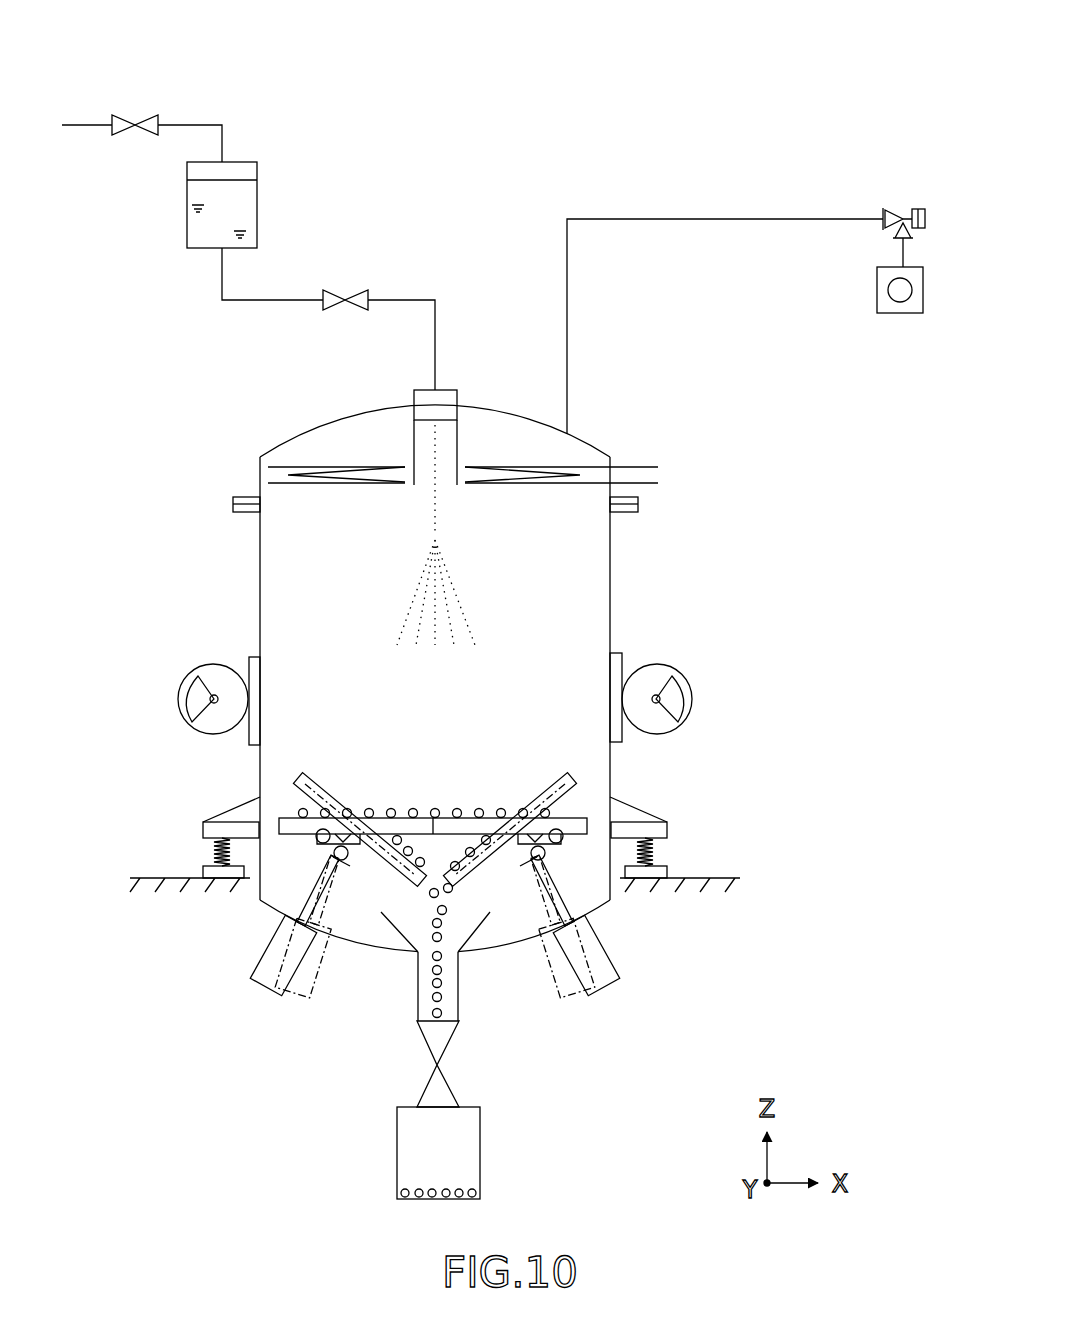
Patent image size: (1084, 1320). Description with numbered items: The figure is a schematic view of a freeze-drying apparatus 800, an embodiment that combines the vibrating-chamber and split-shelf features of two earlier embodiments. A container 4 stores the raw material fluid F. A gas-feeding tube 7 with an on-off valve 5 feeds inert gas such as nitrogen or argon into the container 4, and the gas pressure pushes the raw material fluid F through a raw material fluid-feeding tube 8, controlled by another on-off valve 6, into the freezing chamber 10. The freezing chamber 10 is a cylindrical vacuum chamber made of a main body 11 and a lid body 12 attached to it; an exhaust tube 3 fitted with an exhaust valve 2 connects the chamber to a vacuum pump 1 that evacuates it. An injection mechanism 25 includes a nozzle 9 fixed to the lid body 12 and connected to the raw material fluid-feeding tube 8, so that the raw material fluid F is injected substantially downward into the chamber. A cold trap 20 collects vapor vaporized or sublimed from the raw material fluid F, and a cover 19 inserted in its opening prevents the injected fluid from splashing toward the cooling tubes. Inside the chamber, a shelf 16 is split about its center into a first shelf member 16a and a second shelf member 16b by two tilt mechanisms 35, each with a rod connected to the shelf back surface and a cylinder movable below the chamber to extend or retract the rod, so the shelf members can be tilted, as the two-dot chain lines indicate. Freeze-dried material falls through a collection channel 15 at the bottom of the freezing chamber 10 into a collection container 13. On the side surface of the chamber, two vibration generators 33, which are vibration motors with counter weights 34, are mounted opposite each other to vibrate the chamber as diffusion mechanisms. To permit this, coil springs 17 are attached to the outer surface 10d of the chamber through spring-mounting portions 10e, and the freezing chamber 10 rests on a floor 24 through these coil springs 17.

The freeze-drying apparatus 800 is at (483, 96).
The vacuum pump 1 is at (880, 315).
The exhaust valve 2 is at (887, 212).
The exhaust tube 3 is at (709, 218).
The container 4 is at (257, 198).
The on-off valve 5 is at (150, 112).
The on-off valve 6 is at (363, 288).
The gas-feeding tube 7 is at (195, 123).
The raw material fluid-feeding tube 8 is at (437, 298).
The nozzle 9 is at (457, 390).
The freezing chamber 10 is at (439, 649).
The outer surface 10d is at (260, 565).
The spring-mounting portion 10e is at (228, 812).
The main body 11 is at (612, 590).
The lid body 12 is at (514, 406).
The collection container 13 is at (480, 1172).
The collection channel 15 is at (418, 990).
The shelf 16 is at (422, 842).
The first shelf member 16a is at (312, 780).
The second shelf member 16b is at (558, 785).
The coil spring 17 is at (208, 848).
The cover 19 is at (414, 447).
The cold trap 20 is at (633, 458).
The floor 24 is at (145, 880).
The injection mechanism 25 is at (399, 485).
The vibration generator 33 is at (214, 664).
The counter weight 34 is at (178, 706).
The tilt mechanism 35 is at (232, 979).
The raw material fluid F is at (187, 198).